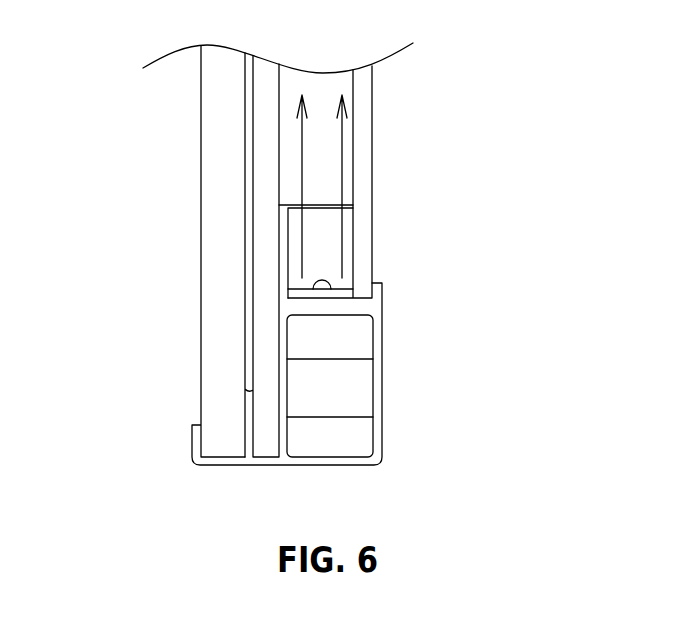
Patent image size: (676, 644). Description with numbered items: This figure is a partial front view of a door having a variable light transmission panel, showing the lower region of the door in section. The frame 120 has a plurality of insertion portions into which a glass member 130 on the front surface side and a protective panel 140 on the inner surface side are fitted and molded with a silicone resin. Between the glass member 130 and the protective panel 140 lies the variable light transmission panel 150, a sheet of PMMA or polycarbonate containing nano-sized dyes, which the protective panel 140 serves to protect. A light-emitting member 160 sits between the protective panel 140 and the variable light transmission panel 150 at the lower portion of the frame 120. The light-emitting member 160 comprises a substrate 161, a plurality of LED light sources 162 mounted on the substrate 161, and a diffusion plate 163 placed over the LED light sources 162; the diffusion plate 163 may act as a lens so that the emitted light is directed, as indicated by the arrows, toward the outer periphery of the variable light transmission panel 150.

The frame 120 is at (378, 388).
The glass member 130 is at (217, 162).
The protective panel 140 is at (365, 112).
The variable light transmission panel 150 is at (265, 253).
The light-emitting member 160 is at (320, 249).
The substrate 161 is at (317, 298).
The LED light sources 162 is at (322, 281).
The diffusion plate 163 is at (320, 202).